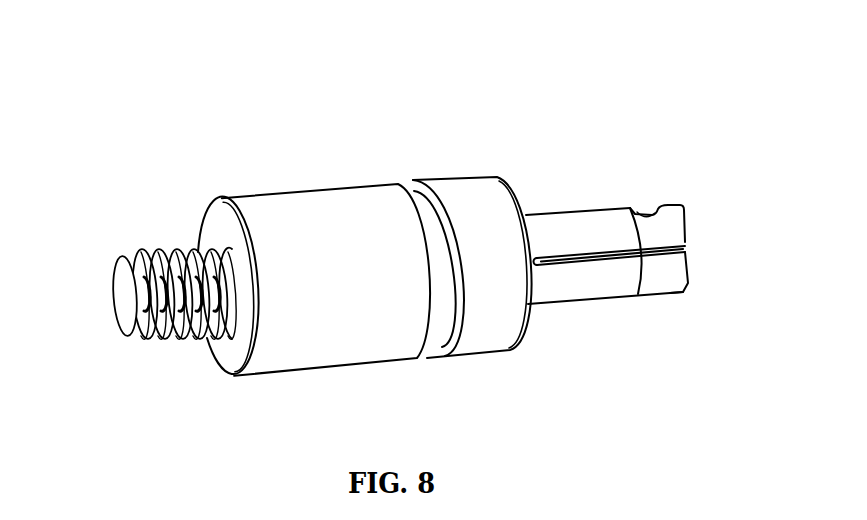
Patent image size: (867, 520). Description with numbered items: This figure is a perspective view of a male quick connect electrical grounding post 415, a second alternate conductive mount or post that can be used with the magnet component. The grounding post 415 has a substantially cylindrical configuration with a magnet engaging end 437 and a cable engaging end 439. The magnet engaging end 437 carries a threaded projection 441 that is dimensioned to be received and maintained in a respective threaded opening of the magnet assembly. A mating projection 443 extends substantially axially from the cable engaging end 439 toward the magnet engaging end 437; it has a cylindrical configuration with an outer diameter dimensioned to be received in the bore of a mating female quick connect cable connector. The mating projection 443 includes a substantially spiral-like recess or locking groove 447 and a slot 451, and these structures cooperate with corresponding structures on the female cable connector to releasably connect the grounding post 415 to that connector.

The male quick connect electrical grounding post 415 is at (406, 237).
The magnet engaging end 437 is at (228, 352).
The threaded projection 441 is at (158, 248).
The mating projection 443 is at (648, 247).
The locking groove 447 is at (652, 211).
The slot 451 is at (612, 262).
The cable engaging end 439 is at (690, 288).